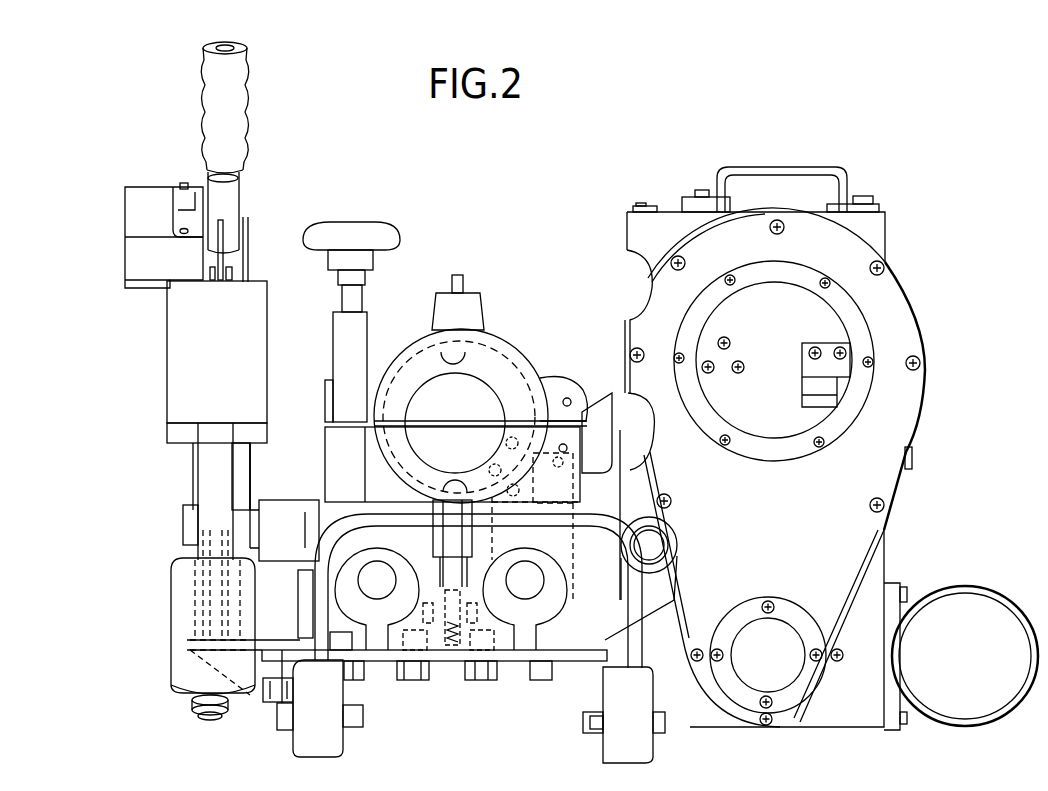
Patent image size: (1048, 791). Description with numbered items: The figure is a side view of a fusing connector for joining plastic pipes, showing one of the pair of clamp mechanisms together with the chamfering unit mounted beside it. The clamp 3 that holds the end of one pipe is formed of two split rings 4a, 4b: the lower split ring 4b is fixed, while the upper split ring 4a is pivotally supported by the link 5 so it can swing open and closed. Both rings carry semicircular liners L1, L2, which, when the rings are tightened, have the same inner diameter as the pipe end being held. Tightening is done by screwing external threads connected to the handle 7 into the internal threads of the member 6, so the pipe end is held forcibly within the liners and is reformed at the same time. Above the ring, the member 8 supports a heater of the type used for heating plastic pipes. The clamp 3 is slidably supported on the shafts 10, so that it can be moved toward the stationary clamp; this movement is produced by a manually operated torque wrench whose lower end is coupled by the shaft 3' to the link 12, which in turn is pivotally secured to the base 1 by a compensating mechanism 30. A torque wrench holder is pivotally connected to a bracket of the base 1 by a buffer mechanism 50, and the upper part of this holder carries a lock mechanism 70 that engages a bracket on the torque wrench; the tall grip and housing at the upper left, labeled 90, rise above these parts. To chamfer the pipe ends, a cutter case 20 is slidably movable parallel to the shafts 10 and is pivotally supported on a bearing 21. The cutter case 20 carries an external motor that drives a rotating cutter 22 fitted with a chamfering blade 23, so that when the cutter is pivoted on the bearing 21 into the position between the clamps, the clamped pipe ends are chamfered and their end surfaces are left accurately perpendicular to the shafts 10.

The base 1 is at (440, 672).
The clamp 3 is at (480, 406).
The shaft 3' is at (255, 476).
The split ring 4a is at (378, 385).
The split ring 4b is at (368, 444).
The link 5 is at (583, 396).
The member 6 is at (367, 340).
The handle 7 is at (370, 232).
The member for supporting a heater 8 is at (465, 283).
The shafts 10 is at (378, 600).
The link 12 is at (450, 570).
The cutter case 20 is at (822, 238).
The bearing 21 is at (660, 561).
The rotating cutter 22 is at (843, 392).
The chamfering blade 23 is at (835, 343).
The compensating mechanism 30 is at (462, 656).
The buffer mechanism 50 is at (170, 640).
The lock mechanism 70 is at (165, 418).
The handle unit 90 is at (120, 272).
The semicircular liner L1 is at (512, 396).
The semicircular liner L2 is at (405, 456).